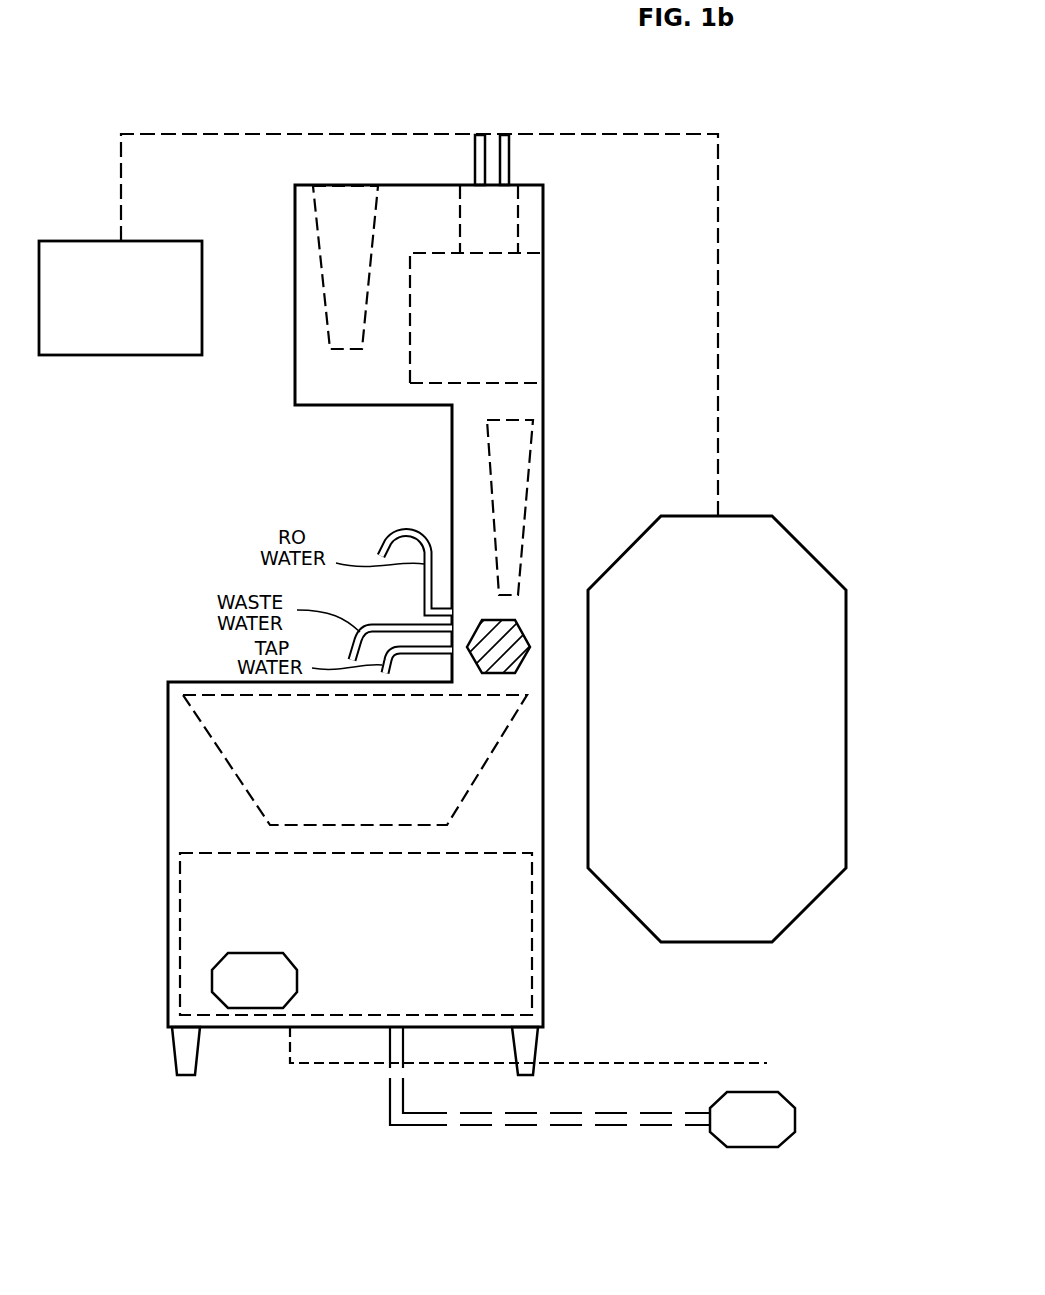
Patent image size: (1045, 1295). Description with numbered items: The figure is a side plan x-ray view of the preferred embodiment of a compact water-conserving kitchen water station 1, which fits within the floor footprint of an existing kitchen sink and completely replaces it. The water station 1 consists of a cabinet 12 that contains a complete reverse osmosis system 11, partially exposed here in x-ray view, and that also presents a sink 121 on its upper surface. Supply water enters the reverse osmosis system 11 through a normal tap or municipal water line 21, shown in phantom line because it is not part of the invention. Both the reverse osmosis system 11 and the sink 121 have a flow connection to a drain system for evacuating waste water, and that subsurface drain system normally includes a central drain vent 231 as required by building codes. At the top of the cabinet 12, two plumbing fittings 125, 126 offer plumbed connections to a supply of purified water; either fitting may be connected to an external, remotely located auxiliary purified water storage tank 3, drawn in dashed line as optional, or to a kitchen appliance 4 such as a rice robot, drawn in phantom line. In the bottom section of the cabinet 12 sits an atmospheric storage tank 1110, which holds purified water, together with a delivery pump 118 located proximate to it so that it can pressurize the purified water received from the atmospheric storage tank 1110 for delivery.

The water station 1 is at (548, 288).
The auxiliary purified water storage tank 3 is at (717, 729).
The kitchen appliance 4 is at (120, 298).
The reverse osmosis system 11 is at (485, 478).
The cabinet 12 is at (208, 133).
The water line 21 is at (583, 1063).
The delivery pump 118 is at (368, 980).
The sink 121 is at (143, 733).
The plumbing fitting 125 is at (509, 157).
The plumbing fitting 126 is at (475, 157).
The central drain vent 231 is at (790, 1097).
The atmospheric storage tank 1110 is at (356, 934).